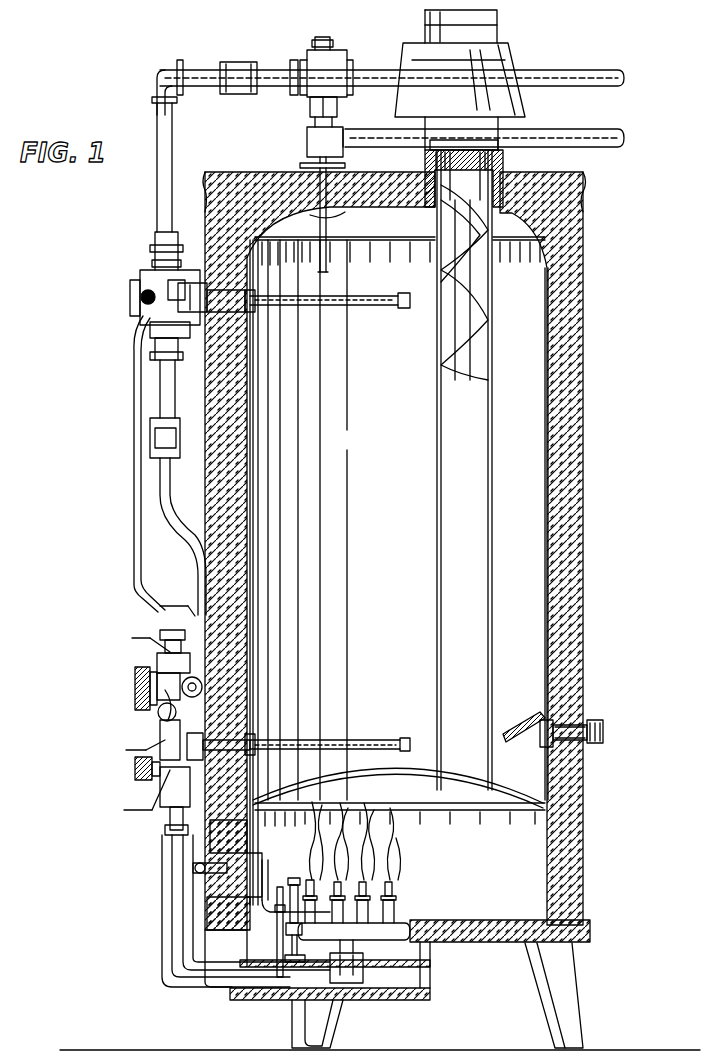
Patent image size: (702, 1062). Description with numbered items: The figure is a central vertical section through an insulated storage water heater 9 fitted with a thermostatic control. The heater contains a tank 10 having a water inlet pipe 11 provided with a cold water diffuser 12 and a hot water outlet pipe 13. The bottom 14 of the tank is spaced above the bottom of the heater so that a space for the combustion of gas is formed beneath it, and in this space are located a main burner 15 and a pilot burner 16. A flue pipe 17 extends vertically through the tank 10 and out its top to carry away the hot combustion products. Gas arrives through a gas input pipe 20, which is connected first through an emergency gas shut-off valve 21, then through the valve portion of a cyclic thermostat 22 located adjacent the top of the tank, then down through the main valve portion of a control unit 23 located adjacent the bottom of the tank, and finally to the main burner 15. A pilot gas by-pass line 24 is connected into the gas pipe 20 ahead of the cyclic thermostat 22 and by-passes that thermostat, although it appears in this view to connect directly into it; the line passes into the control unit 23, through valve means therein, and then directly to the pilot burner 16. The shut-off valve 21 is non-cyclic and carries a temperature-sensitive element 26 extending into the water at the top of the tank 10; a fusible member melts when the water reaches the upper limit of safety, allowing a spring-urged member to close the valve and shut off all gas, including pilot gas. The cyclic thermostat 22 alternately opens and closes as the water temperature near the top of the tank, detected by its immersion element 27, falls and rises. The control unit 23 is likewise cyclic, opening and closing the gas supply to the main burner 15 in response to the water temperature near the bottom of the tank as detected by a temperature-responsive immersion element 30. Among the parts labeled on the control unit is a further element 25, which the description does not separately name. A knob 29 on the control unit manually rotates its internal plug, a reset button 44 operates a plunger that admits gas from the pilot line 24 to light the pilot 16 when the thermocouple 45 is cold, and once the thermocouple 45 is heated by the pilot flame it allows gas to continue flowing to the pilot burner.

The insulated storage water heater 9 is at (592, 380).
The tank 10 is at (548, 423).
The water inlet pipe 11 is at (588, 726).
The cold water diffuser 12 is at (516, 720).
The hot water outlet pipe 13 is at (600, 144).
The bottom of tank 14 is at (348, 770).
The main burner 15 is at (344, 892).
The pilot burner 16 is at (294, 882).
The flue pipe 17 is at (464, 465).
The gas input pipe 20 is at (600, 76).
The emergency gas shut-off valve 21 is at (330, 76).
The cyclic thermostat 22 is at (160, 286).
The control unit 23 is at (120, 677).
The pilot gas by-pass line 24 is at (138, 348).
The valve 25 is at (161, 652).
The temperature-sensitive element 26 is at (330, 271).
The immersion element 27 is at (378, 302).
The knob 29 is at (137, 674).
The temperature-responsive immersion element 30 is at (377, 740).
The reset button 44 is at (187, 680).
The thermocouple 45 is at (295, 872).